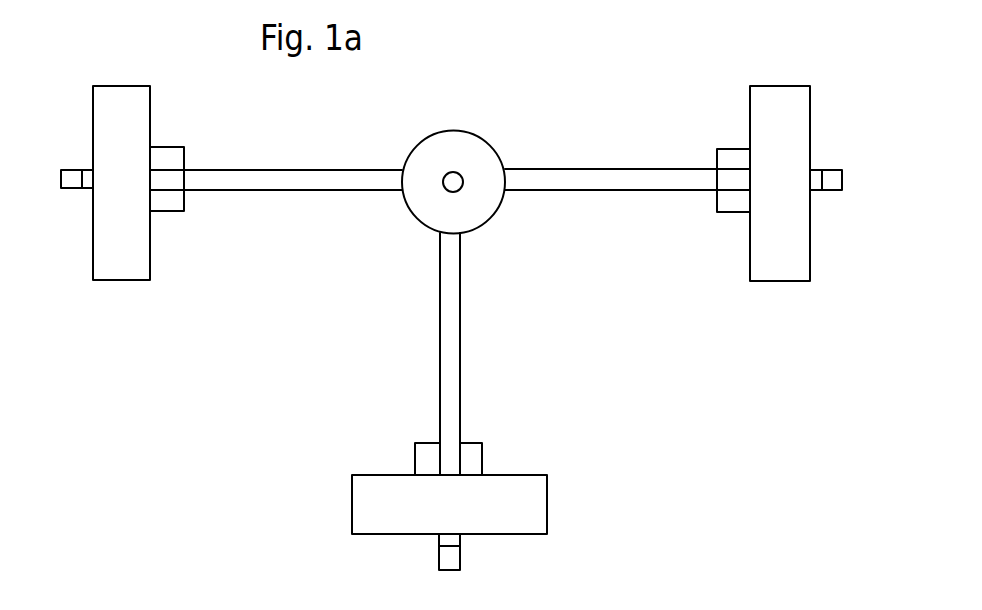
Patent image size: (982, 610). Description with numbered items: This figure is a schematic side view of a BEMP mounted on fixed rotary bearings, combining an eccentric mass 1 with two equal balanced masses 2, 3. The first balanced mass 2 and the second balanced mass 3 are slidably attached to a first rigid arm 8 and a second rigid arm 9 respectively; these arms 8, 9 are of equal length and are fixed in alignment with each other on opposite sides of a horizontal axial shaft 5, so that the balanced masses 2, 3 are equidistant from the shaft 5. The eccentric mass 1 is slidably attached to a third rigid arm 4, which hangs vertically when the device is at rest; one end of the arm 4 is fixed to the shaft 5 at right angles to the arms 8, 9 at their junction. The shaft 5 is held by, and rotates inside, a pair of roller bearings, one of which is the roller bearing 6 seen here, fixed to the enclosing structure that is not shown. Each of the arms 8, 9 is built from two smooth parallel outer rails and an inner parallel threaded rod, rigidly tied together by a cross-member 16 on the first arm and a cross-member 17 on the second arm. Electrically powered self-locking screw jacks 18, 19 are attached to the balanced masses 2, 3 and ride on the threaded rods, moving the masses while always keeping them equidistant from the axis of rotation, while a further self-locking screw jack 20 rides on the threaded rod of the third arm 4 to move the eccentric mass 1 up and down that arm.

The eccentric mass 1 is at (352, 502).
The first balanced mass 2 is at (123, 282).
The second balanced mass 3 is at (775, 282).
The third rigid arm 4 is at (460, 325).
The horizontal axial shaft 5 is at (462, 175).
The roller bearing 6 is at (458, 131).
The first rigid arm 8 is at (317, 190).
The second rigid arm 9 is at (588, 193).
The cross-member 16 is at (65, 200).
The cross-member 17 is at (833, 193).
The self-locking screw jack 18 is at (165, 147).
The self-locking screw jack 19 is at (730, 149).
The self-locking screw jack 20 is at (482, 457).